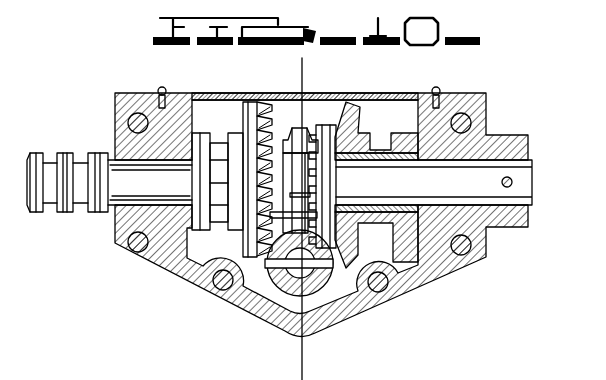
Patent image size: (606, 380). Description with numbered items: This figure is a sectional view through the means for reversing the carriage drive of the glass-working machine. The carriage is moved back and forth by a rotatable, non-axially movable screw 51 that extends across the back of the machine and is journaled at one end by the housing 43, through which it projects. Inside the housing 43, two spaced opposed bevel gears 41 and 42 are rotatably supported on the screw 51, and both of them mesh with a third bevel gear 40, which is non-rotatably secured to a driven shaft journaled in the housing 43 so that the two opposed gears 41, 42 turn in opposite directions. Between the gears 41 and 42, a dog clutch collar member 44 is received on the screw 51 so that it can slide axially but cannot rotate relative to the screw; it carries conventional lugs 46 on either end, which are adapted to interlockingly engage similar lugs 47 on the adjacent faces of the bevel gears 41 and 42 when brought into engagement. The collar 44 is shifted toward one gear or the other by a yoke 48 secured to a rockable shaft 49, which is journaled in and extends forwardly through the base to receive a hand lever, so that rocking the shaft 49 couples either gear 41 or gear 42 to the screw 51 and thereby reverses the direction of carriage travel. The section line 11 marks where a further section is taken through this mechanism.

The section line 11— 11 is at (306, 62).
The third bevel gear 40 is at (298, 128).
The bevel gear 41 is at (358, 132).
The bevel gear 42 is at (240, 118).
The housing 43 is at (443, 262).
The dog clutch collar member 44 is at (292, 150).
The lugs 46 is at (322, 184).
The lugs 47 is at (340, 152).
The yoke 48 is at (358, 242).
The rockable shaft 49 is at (322, 286).
The screw 51 is at (62, 212).